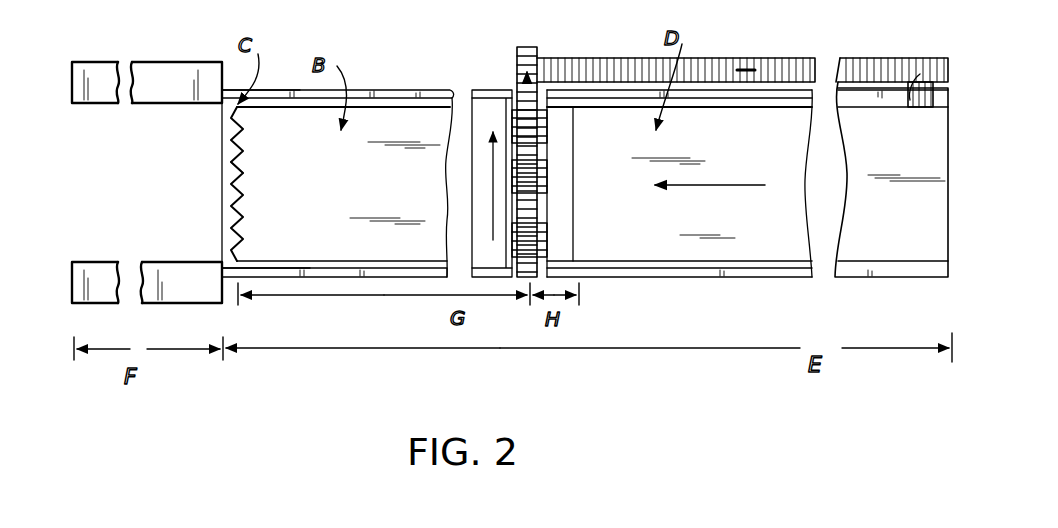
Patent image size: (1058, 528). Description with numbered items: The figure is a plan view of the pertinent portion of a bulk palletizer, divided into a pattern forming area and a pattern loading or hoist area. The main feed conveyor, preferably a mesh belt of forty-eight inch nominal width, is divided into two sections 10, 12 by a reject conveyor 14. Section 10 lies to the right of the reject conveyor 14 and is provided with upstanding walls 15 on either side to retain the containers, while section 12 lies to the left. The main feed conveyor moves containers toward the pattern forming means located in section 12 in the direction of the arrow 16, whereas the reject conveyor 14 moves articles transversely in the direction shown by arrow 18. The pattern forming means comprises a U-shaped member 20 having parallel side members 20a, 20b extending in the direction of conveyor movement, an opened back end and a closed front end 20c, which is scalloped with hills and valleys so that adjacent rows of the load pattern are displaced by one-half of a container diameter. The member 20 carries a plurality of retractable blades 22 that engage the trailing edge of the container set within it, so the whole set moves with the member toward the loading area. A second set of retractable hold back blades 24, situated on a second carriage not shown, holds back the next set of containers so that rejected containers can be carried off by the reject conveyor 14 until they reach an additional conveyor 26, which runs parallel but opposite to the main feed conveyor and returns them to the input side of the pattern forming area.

The main feed conveyor section 10 is at (760, 145).
The main feed conveyor section 12 is at (412, 188).
The reject conveyor 14 is at (516, 55).
The upstanding walls 15 is at (783, 98).
The arrow 16 is at (720, 186).
The arrow 18 is at (462, 230).
The U-shaped member 20 is at (431, 92).
The side member 20a is at (318, 100).
The side member 20b is at (310, 262).
The closed front end 20c is at (240, 168).
The retractable blades 22 is at (514, 128).
The hold back blades 24 is at (548, 114).
The additional conveyor 26 is at (736, 58).